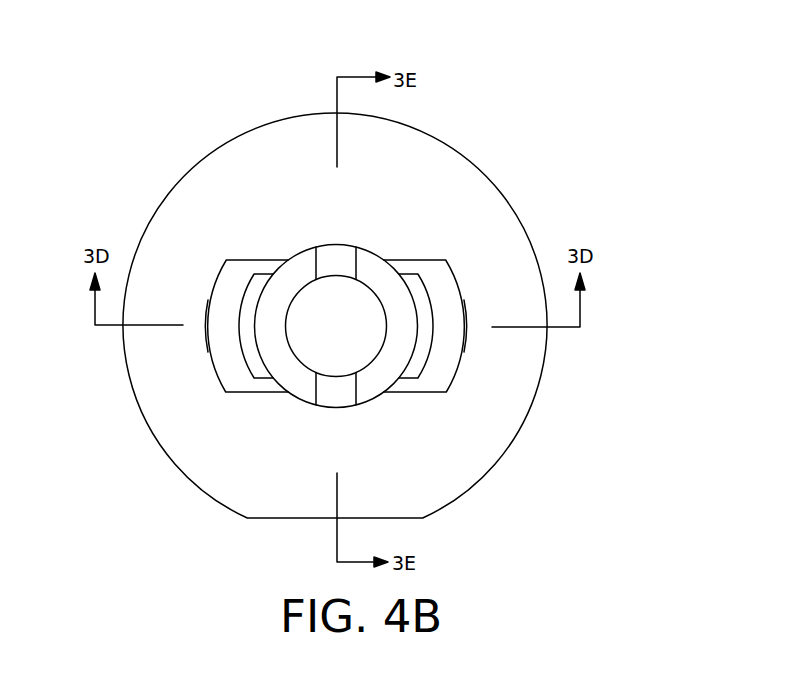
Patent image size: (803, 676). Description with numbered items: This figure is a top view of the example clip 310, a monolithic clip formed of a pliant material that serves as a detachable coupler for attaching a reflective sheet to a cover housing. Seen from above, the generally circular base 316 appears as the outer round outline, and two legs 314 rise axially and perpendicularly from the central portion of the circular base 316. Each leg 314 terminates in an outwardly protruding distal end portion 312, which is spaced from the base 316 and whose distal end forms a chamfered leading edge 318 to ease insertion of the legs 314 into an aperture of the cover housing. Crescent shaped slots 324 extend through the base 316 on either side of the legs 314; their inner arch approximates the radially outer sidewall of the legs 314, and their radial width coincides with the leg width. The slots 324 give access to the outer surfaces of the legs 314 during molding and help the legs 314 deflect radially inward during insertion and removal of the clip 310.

The clip 310 is at (339, 274).
The outwardly protruding distal end portion 312 is at (257, 376).
The legs 314 is at (303, 248).
The circular base 316 is at (408, 126).
The chamfered leading edge 318 is at (227, 260).
The slots 324 is at (212, 360).